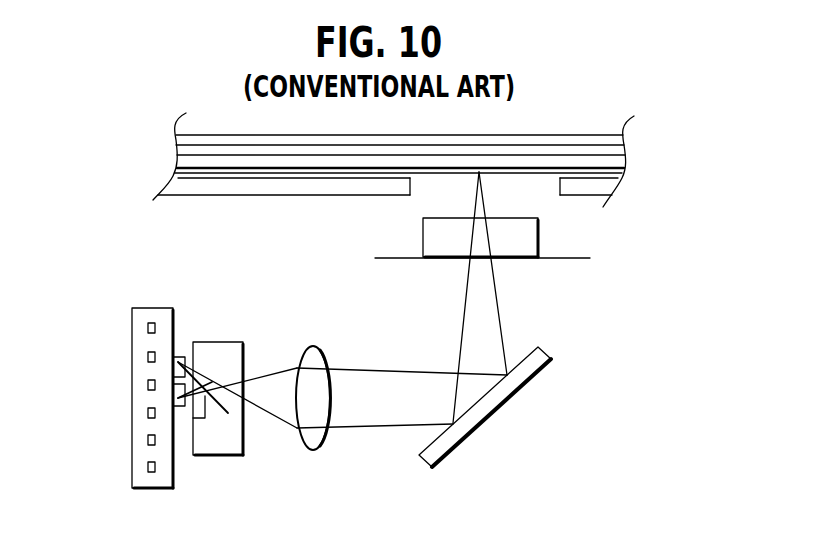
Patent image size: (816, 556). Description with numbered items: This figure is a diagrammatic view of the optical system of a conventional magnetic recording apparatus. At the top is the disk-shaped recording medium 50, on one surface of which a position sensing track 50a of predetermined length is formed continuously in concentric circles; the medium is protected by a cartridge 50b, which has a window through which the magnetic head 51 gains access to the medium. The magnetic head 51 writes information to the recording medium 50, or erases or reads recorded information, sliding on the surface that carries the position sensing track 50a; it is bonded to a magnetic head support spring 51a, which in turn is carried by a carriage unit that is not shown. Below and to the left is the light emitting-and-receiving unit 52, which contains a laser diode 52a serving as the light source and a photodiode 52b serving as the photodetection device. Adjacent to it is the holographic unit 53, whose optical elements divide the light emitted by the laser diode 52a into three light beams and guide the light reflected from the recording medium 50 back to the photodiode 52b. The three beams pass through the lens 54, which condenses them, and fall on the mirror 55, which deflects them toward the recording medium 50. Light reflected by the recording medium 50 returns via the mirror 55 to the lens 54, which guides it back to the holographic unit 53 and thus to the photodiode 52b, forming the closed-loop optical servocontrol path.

The recording medium 50 is at (626, 152).
The position sensing track 50a is at (528, 173).
The cartridge 50b is at (186, 113).
The magnetic head 51 is at (423, 233).
The magnetic head support spring 51a is at (575, 259).
The light emitting-and-receiving unit 52 is at (150, 307).
The laser diode 52a is at (178, 408).
The photodiode 52b is at (183, 357).
The holographic unit 53 is at (245, 342).
The lens 54 is at (323, 353).
The mirror 55 is at (550, 352).